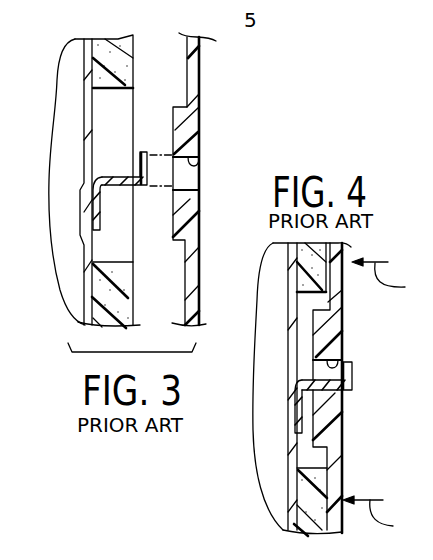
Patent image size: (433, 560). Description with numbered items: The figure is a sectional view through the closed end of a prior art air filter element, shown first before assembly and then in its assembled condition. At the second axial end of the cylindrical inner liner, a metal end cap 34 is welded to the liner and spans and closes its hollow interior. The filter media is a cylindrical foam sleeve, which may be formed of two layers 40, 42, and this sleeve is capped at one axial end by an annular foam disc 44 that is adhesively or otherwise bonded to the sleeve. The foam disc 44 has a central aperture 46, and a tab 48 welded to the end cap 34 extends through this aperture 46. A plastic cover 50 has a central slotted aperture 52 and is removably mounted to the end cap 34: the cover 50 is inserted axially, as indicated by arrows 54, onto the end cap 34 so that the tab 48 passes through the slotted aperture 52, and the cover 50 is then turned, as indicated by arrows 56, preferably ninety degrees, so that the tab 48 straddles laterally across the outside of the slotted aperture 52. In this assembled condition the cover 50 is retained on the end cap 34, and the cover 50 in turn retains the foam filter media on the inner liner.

In FIG. 3, the second end cap 34 is at (82, 107).
In FIG. 4, the second end cap 34 is at (289, 315).
In FIG. 3, the annular foam disc 44 is at (120, 43).
In FIG. 4, the annular foam disc 44 is at (306, 520).
In FIG. 3, the central aperture 46 is at (107, 88).
In FIG. 4, the central aperture 46 is at (299, 304).
In FIG. 3, the tab 48 is at (115, 176).
In FIG. 4, the tab 48 is at (355, 378).
In FIG. 3, the cover 50 is at (202, 73).
In FIG. 4, the cover 50 is at (342, 318).
In FIG. 3, the central slotted aperture 52 is at (199, 163).
In FIG. 4, the central slotted aperture 52 is at (347, 364).
In FIG. 4, the arrows 54 is at (388, 398).
In FIG. 3, the first layer of foam sleeve 40 is at (432, 74).
In FIG. 3, the second layer of foam sleeve 42 is at (432, 117).
In FIG. 3, the arrows 56 is at (166, 4).